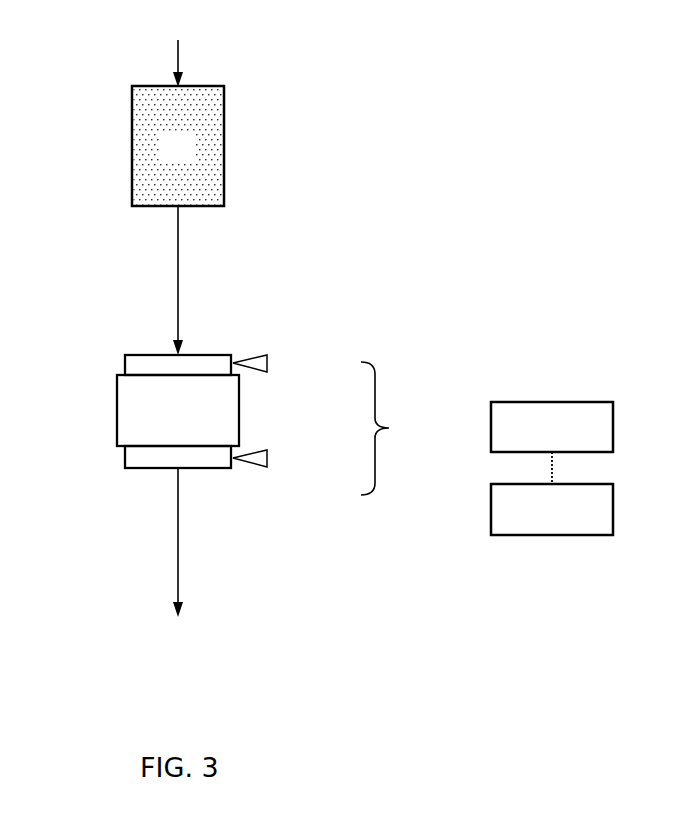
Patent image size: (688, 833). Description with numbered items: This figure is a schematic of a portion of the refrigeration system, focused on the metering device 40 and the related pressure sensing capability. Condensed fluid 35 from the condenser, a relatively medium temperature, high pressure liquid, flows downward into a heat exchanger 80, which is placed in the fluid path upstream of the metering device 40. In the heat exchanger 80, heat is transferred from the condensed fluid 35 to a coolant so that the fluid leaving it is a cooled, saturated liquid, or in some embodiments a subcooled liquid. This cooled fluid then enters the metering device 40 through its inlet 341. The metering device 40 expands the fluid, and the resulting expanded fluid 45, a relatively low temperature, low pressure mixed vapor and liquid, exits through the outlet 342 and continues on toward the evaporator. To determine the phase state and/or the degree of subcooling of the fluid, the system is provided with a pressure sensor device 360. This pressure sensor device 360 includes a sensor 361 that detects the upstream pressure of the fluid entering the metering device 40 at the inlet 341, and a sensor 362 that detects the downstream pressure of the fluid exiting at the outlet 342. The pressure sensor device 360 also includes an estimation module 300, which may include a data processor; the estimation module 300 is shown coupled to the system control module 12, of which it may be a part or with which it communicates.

The condensed fluid 35 is at (178, 60).
The heat exchanger 80 is at (163, 158).
The inlet 341 is at (130, 366).
The metering device 40 is at (163, 420).
The outlet 342 is at (125, 458).
The sensor 361 is at (267, 363).
The sensor 362 is at (267, 458).
The pressure sensor device 360 is at (491, 427).
The estimation module 300 is at (530, 445).
The system control module 12 is at (537, 527).
The expanded fluid 45 is at (178, 556).